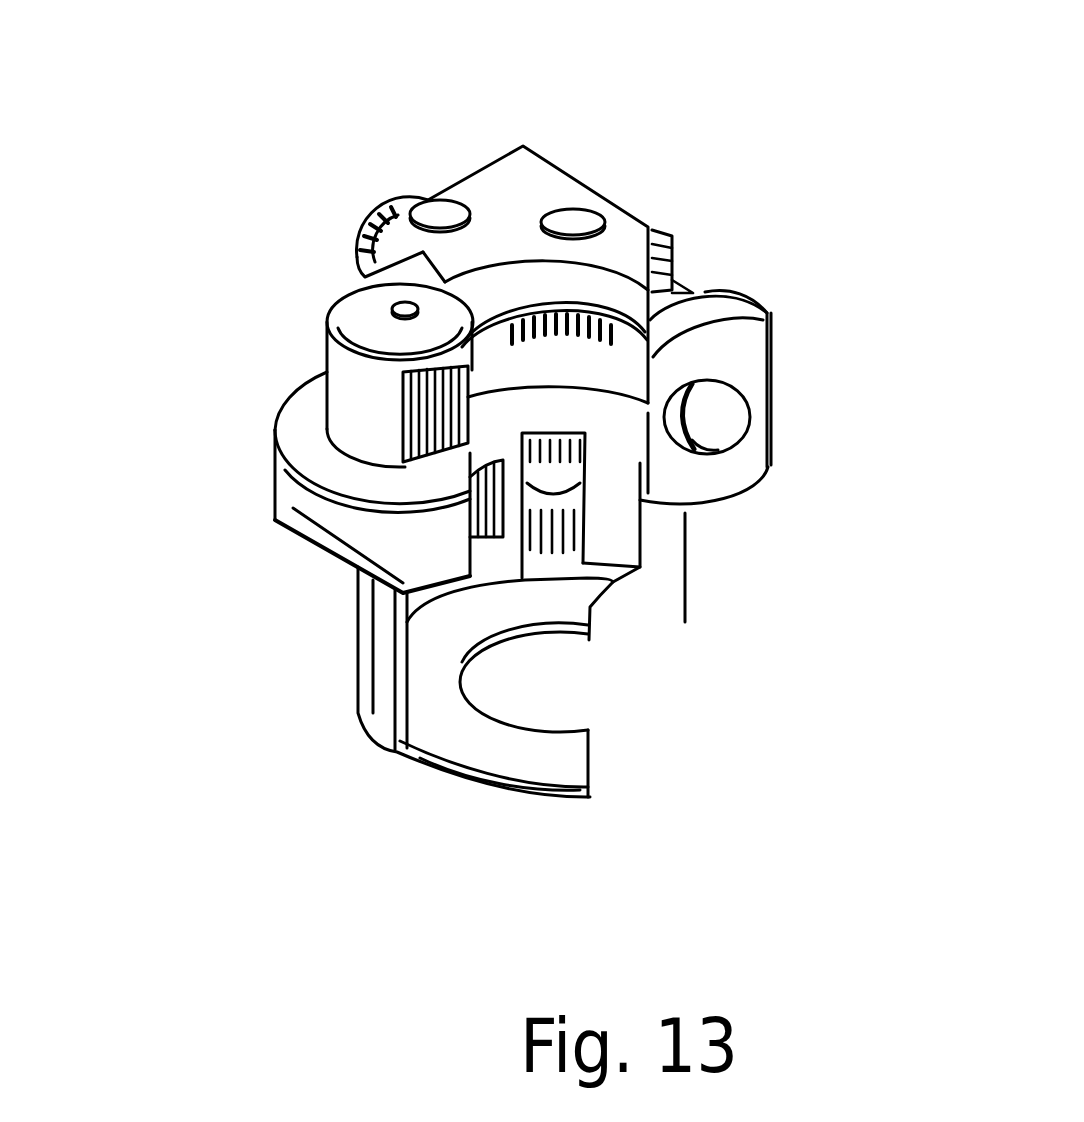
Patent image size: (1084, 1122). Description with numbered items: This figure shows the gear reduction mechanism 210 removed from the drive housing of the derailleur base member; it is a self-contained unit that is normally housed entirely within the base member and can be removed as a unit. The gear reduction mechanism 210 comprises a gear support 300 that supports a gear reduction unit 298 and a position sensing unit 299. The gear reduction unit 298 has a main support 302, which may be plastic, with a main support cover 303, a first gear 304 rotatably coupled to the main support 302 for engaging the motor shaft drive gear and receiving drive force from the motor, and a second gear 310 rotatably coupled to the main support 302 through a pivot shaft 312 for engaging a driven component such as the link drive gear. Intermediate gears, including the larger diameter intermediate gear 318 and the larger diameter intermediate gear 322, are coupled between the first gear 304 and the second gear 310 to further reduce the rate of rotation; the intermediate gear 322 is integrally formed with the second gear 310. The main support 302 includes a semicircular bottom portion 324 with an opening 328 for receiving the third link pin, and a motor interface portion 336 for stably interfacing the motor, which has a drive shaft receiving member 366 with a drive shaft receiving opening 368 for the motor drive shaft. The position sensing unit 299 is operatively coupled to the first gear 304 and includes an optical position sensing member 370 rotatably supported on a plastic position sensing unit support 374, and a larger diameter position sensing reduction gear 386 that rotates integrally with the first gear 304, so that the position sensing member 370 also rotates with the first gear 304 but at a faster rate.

The gear reduction mechanism 210 is at (197, 219).
The position sensing unit 299 is at (552, 124).
The position sensing unit support 374 is at (490, 192).
The optical position sensing member 370 is at (367, 221).
The position sensing reduction gear 386 is at (663, 238).
The pivot shaft 312 is at (395, 308).
The second gear 310 is at (405, 423).
The main support cover 303 is at (303, 432).
The main support 302 is at (292, 505).
The gear support 300 is at (240, 480).
The motor interface portion 336 is at (792, 304).
The drive shaft receiving member 366 is at (772, 341).
The first gear 304 is at (680, 408).
The drive shaft receiving opening 368 is at (710, 432).
The gear reduction unit 298 is at (309, 640).
The intermediate gear 322 is at (493, 517).
The intermediate gear 318 is at (580, 536).
The opening 328 is at (553, 690).
The semicircular bottom portion 324 is at (520, 770).